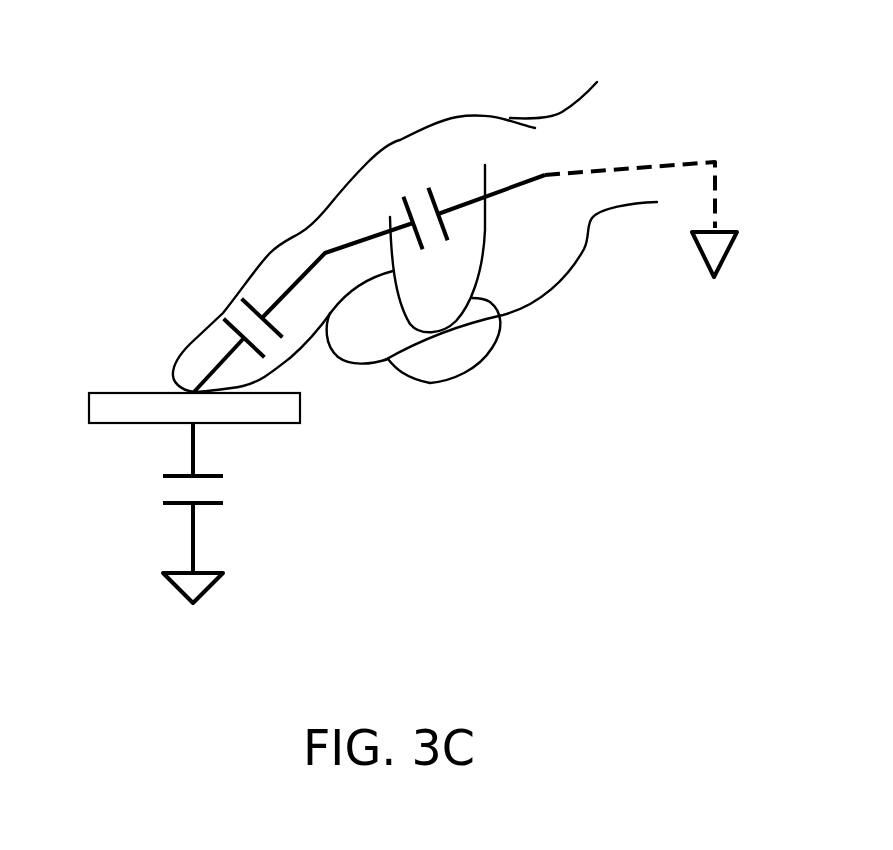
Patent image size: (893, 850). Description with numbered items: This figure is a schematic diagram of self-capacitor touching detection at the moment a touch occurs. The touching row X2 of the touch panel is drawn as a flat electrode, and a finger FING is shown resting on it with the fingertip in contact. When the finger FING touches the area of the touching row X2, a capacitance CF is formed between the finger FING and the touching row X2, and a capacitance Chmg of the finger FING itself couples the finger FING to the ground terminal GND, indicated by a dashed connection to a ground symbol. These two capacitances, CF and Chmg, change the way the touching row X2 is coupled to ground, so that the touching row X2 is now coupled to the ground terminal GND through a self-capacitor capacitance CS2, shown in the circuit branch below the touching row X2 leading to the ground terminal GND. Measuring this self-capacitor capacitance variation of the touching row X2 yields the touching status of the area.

The finger FING is at (492, 142).
The capacitance between the finger and the touching row CF is at (240, 312).
The capacitance of the finger Chmg is at (435, 245).
The touching row X2 is at (173, 411).
The self-capacitor capacitance CS2 is at (220, 498).
The ground terminal GND is at (450, 394).